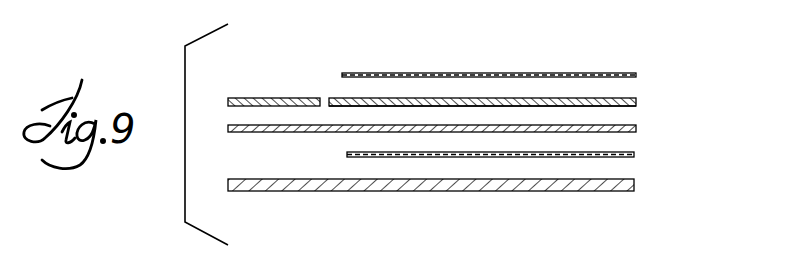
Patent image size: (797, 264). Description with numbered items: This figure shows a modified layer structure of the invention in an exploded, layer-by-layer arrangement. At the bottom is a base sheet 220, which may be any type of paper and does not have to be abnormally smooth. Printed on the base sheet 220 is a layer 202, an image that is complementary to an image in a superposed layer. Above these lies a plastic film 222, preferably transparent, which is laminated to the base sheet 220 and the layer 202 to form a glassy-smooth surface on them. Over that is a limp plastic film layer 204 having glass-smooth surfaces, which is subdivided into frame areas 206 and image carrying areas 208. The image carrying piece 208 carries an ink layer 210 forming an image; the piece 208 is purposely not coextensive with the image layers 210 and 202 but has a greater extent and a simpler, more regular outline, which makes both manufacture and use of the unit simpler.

The layer 202 is at (634, 154).
The layer 204 is at (636, 101).
The frame areas 206 is at (296, 98).
The image carrying areas 208 is at (451, 97).
The ink layer 210 is at (498, 75).
The base sheet 220 is at (634, 185).
The plastic film 222 is at (636, 127).